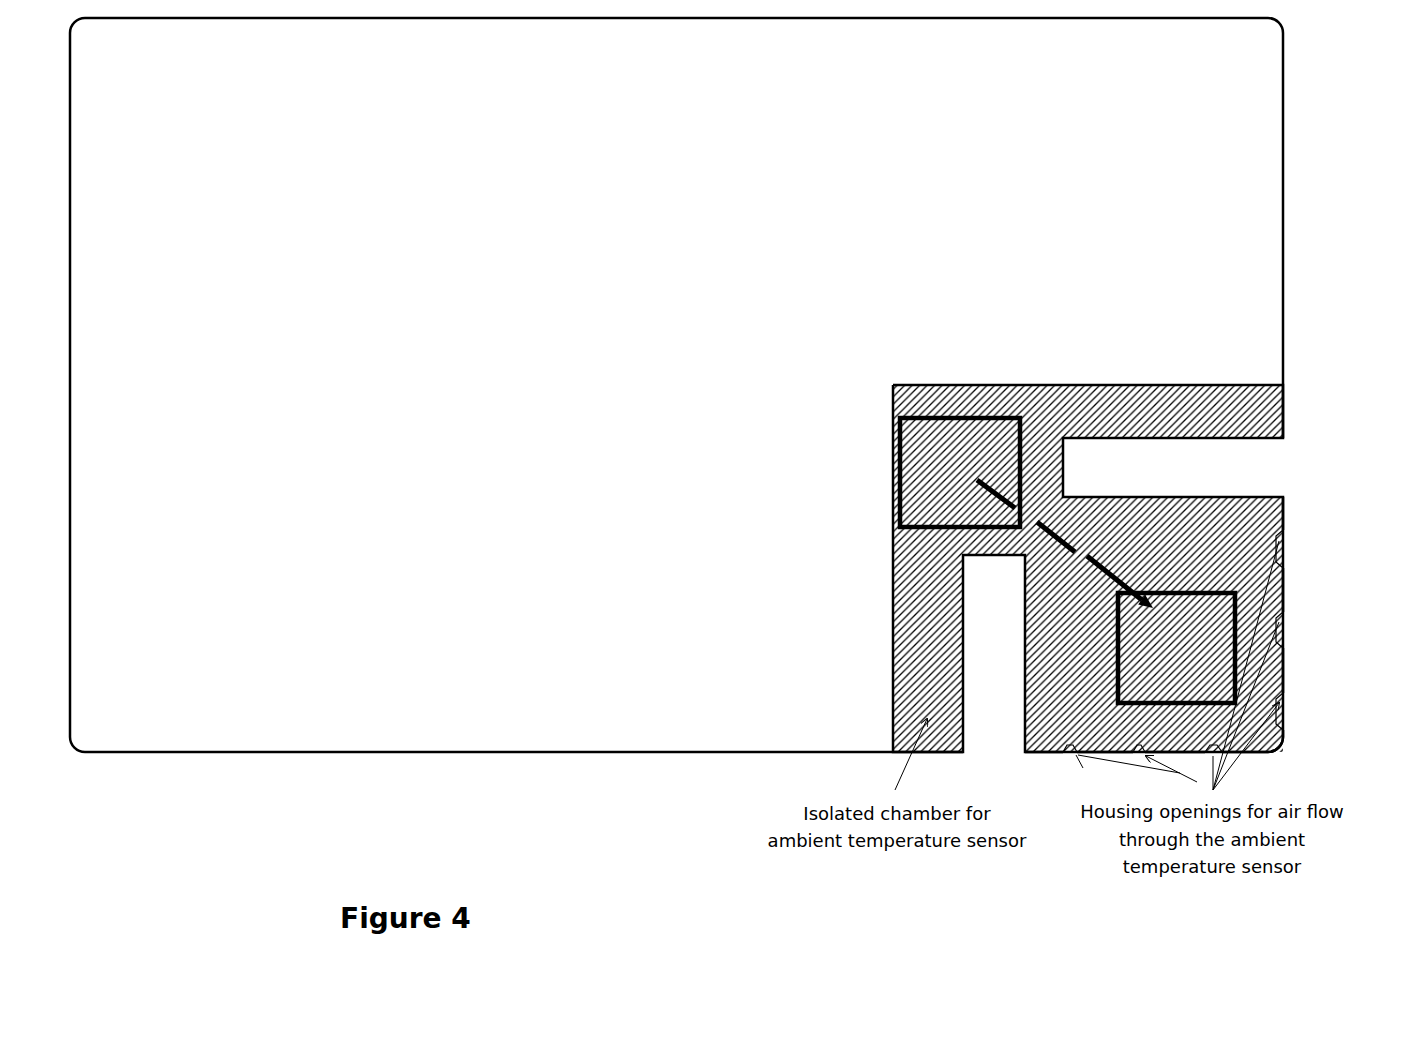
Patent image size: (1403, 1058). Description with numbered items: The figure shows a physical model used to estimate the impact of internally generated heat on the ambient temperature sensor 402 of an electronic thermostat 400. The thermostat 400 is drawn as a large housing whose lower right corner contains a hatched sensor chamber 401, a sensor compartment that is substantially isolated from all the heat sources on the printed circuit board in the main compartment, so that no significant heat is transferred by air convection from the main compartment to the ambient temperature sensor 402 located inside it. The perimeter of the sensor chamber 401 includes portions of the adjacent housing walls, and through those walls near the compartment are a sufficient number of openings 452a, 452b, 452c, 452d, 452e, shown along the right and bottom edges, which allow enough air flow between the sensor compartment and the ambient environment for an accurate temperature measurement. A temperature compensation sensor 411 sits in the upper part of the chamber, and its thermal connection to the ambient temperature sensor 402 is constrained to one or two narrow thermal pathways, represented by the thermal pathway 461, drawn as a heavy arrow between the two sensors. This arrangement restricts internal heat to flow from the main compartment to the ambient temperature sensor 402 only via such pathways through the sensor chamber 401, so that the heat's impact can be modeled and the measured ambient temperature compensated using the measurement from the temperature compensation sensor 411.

The electronic thermostat 400 is at (676, 385).
The sensor chamber 401 is at (1062, 382).
The temperature compensation sensor 411 is at (960, 472).
The ambient temperature sensor 402 is at (1176, 648).
The thermal pathway 461 is at (1062, 516).
The opening 452a is at (1287, 542).
The opening 452b is at (1288, 622).
The opening 452c is at (1287, 704).
The opening 452d is at (1228, 760).
The opening 452e is at (1068, 758).